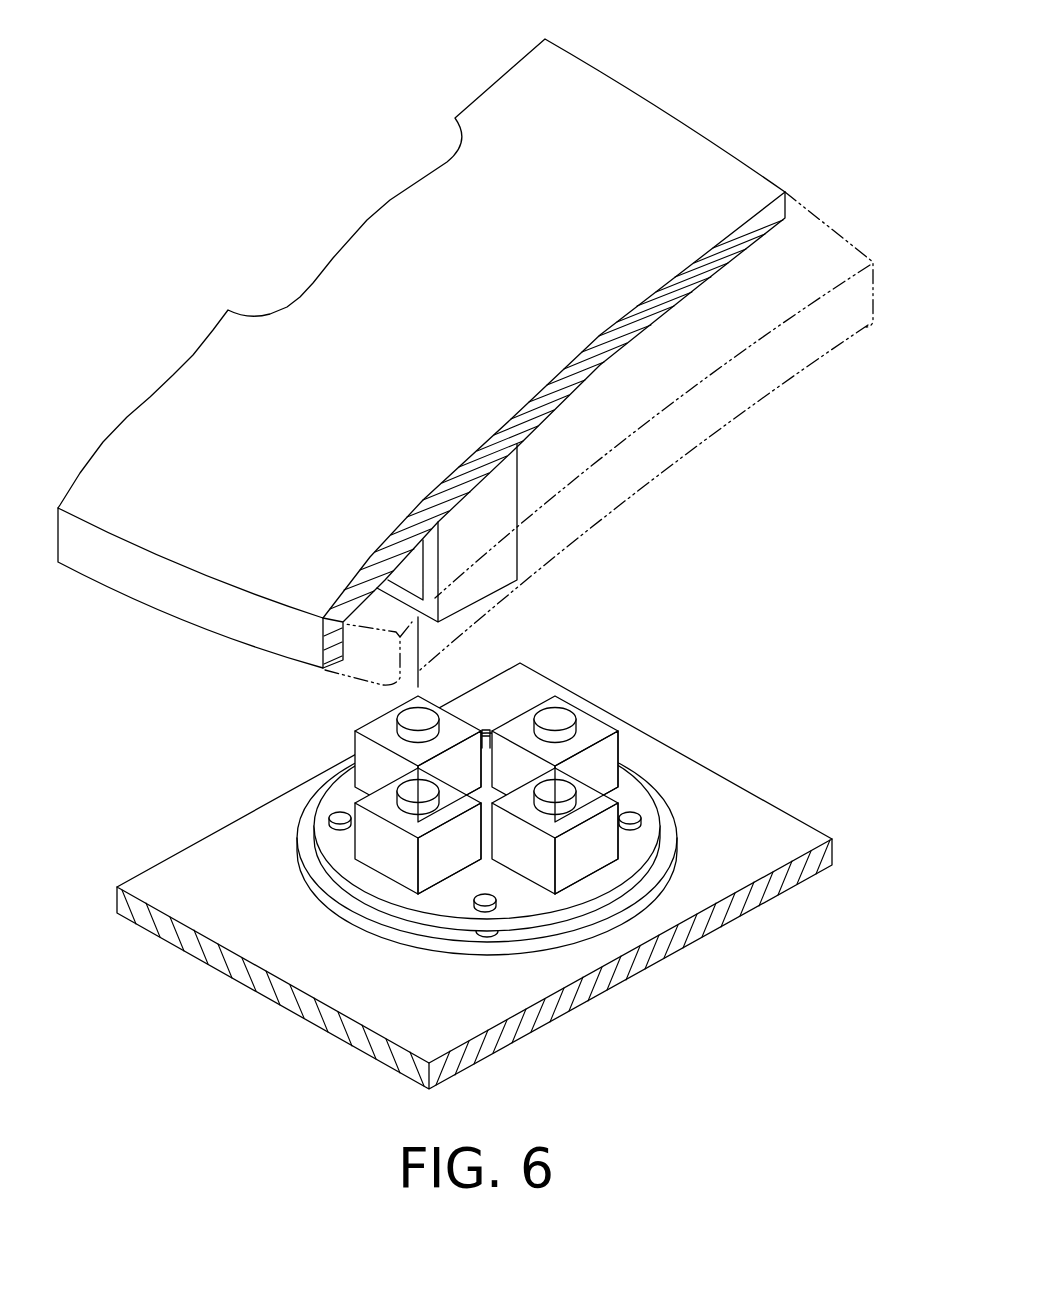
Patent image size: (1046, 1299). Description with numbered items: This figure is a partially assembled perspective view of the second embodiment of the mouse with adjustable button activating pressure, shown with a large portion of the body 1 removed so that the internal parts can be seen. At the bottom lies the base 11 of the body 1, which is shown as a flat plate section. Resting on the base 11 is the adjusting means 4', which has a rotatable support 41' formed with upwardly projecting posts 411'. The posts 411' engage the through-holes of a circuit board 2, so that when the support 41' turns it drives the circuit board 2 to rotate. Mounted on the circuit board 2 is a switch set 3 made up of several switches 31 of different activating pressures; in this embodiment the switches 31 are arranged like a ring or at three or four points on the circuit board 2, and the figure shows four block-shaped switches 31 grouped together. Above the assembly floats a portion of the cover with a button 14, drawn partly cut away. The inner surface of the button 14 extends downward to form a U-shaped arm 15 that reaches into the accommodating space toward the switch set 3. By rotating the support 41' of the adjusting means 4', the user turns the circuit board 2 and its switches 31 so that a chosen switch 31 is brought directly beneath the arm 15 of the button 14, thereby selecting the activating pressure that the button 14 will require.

The body 1 is at (197, 972).
The base 11 is at (545, 1026).
The circuit board 2 is at (653, 777).
The switch set 3 is at (593, 710).
The switches 31 is at (438, 850).
The adjusting means 4' is at (580, 838).
The support 41' is at (549, 922).
The posts 411' is at (574, 833).
The button 14 is at (605, 105).
The arm 15 is at (492, 525).